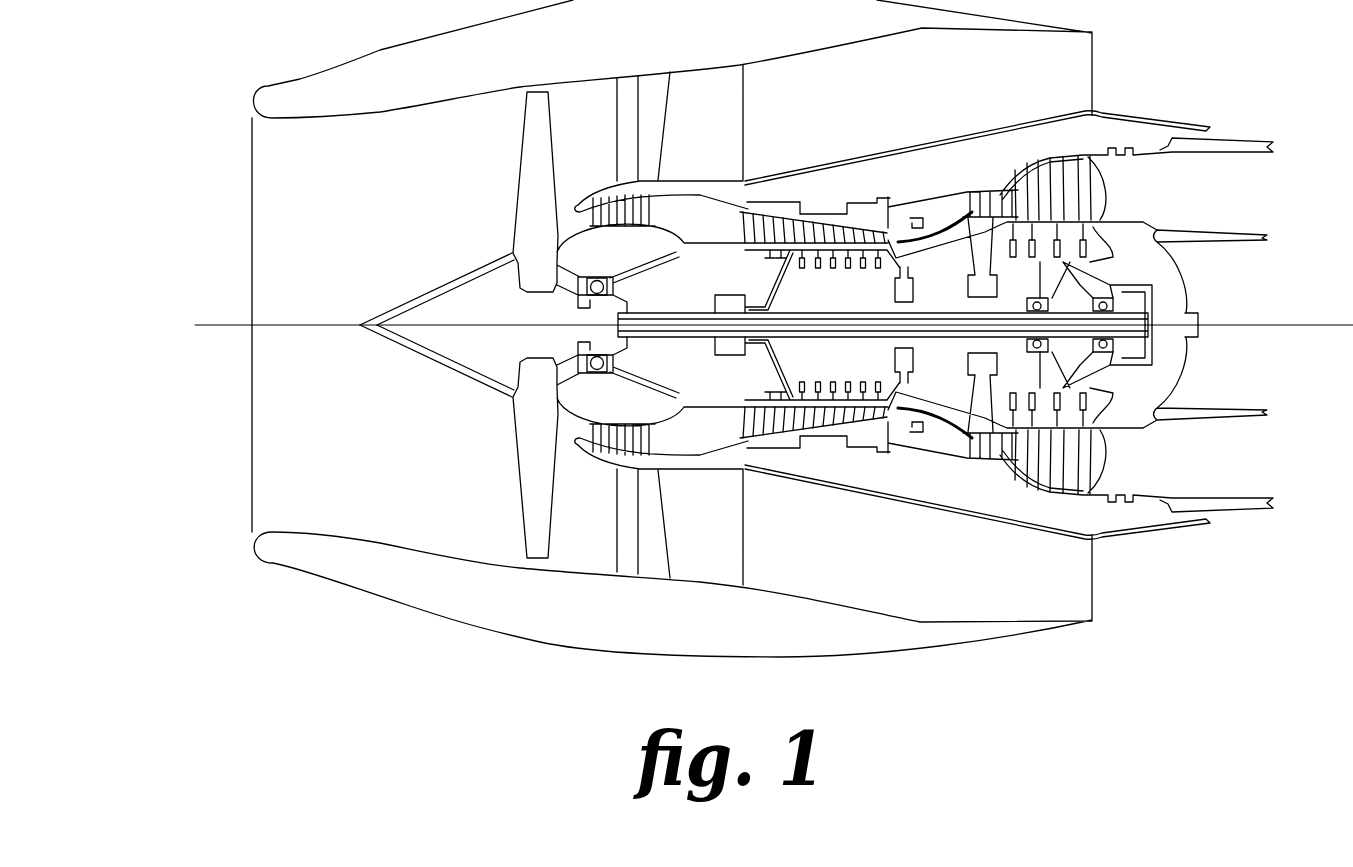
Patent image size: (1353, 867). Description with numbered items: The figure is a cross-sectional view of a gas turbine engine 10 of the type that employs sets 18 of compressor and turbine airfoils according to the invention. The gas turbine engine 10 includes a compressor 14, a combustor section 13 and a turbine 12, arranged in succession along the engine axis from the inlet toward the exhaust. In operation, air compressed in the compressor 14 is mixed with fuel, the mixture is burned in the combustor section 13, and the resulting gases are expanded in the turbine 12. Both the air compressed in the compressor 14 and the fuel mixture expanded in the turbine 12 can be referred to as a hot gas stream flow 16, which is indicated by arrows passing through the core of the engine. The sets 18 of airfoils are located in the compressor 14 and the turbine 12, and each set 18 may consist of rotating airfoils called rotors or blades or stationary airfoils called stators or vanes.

The gas turbine engine 10 is at (200, 431).
The turbine 12 is at (1028, 158).
The combustor section 13 is at (943, 242).
The compressor 14 is at (812, 208).
The hot gas stream flow 16 is at (725, 282).
The set of airfoils 18 is at (845, 215).